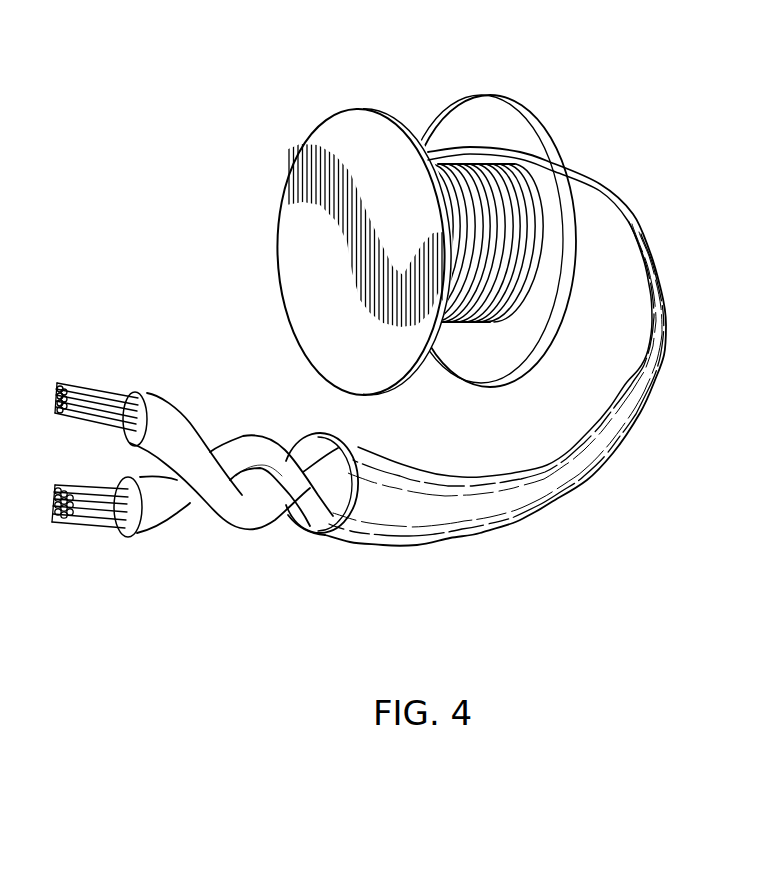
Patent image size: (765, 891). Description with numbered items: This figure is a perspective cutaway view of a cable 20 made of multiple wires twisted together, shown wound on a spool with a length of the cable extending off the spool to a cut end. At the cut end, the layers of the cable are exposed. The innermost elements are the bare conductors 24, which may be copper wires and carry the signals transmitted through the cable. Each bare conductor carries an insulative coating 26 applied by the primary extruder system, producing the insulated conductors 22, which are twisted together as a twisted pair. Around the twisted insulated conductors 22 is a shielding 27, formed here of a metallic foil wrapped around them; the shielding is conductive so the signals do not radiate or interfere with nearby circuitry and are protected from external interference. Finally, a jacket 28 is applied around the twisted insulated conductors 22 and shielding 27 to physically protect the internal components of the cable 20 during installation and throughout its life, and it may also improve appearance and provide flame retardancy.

The cable 20 is at (545, 93).
The insulated conductors 22 is at (253, 425).
The bare conductors 24 is at (90, 388).
The insulative coating 26 is at (197, 440).
The shielding 27 is at (306, 432).
The jacket 28 is at (310, 533).